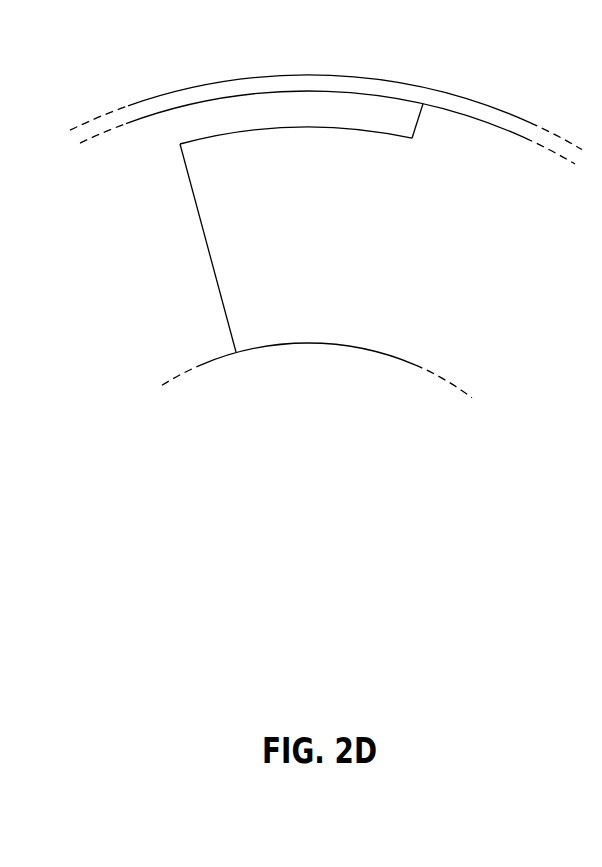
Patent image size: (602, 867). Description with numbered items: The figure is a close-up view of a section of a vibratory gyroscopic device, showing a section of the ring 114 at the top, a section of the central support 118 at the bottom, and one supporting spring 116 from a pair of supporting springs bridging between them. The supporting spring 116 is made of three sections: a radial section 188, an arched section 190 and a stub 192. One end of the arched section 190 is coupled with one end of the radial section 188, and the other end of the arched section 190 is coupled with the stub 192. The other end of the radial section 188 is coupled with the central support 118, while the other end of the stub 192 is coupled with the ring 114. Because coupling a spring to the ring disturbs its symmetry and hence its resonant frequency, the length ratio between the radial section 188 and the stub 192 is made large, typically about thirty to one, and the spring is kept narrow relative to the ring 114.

The ring 114 is at (458, 96).
The supporting spring 116 is at (324, 228).
The central support 118 is at (385, 353).
The radial section 188 is at (205, 235).
The arched section 190 is at (317, 133).
The stub 192 is at (416, 127).